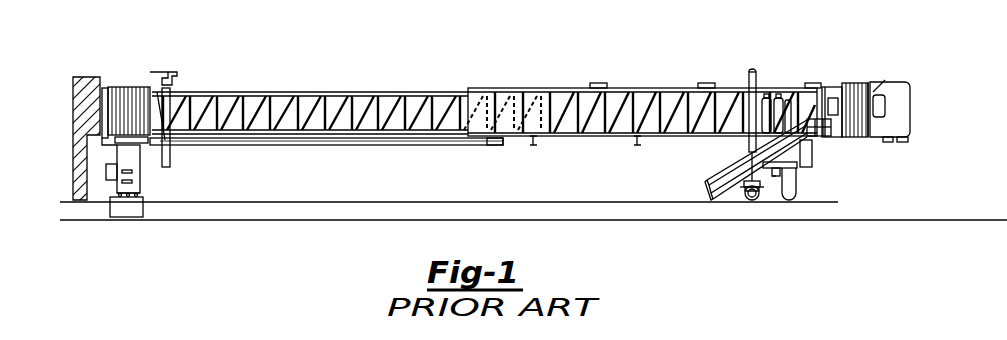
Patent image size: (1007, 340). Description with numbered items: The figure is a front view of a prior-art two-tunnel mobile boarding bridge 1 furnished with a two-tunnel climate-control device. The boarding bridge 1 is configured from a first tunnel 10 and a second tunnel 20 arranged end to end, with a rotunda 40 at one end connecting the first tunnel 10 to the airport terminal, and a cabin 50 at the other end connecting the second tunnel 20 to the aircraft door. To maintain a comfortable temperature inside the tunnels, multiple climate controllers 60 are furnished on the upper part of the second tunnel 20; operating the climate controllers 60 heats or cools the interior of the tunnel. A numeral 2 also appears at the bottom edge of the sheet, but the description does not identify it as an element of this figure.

The 2-tunnel mobile boarding bridge 1 is at (502, 78).
The first tunnel 10 is at (342, 92).
The second tunnel 20 is at (657, 88).
The rotunda 40 is at (122, 88).
The cabin 50 is at (877, 89).
The climate controllers 60 is at (600, 83).
The boarding bridge of adjacent figure 2 is at (583, 339).